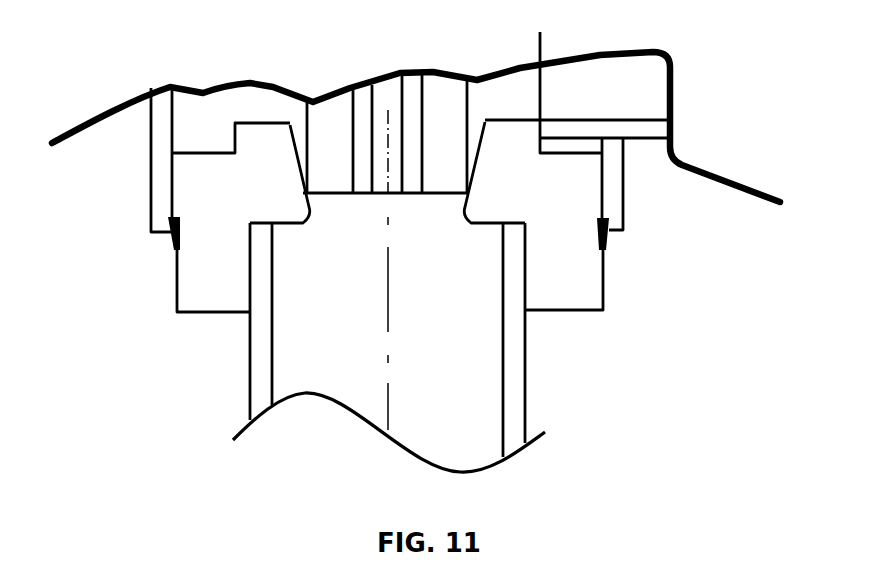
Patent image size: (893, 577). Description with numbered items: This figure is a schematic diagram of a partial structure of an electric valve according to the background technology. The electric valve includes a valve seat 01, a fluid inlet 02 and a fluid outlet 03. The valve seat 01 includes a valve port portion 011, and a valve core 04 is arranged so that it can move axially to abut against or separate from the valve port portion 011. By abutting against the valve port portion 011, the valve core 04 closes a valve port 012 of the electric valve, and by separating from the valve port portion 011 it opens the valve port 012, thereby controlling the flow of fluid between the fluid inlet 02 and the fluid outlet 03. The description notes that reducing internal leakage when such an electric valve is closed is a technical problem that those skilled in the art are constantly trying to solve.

The valve seat 01 is at (557, 200).
The valve port portion 011 is at (303, 212).
The valve port 012 is at (403, 210).
The fluid inlet 02 is at (605, 90).
The fluid outlet 03 is at (308, 309).
The valve core 04 is at (333, 143).